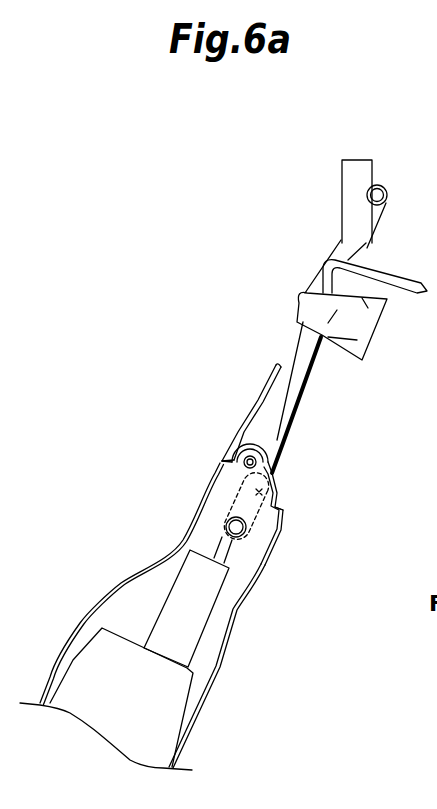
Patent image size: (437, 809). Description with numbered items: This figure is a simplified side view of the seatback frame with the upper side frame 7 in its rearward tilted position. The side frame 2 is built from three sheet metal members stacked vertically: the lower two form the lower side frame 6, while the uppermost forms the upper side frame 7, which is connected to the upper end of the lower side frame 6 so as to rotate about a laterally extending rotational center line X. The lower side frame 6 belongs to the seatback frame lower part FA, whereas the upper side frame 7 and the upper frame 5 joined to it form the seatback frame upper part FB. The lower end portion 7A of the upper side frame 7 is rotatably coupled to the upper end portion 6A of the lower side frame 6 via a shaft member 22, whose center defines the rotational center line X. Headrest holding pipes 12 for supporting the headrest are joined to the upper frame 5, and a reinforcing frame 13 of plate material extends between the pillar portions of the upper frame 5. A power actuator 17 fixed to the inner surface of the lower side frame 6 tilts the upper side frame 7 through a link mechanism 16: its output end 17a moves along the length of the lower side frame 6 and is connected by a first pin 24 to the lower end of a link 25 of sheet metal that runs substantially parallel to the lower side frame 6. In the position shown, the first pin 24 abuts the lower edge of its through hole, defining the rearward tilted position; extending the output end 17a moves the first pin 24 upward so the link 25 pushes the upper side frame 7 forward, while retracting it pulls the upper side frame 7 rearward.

The side frame 2 is at (105, 584).
The upper frame 5 is at (293, 342).
The lower side frame 6 is at (163, 558).
The upper end portion of the lower side frame 6A is at (236, 462).
The upper side frame 7 is at (264, 390).
The lower end portion of the upper side frame 7A is at (284, 468).
The headrest holding pipe 12 is at (362, 166).
The reinforcing frame 13 is at (371, 327).
The link mechanism 16 is at (296, 500).
The power actuator 17 is at (206, 637).
The output end 17a is at (233, 560).
The shaft member 22 is at (278, 458).
The first pin 24 is at (248, 533).
The link 25 is at (286, 521).
The rotational center line X is at (238, 452).
The seatback frame lower part FA is at (60, 645).
The seatback frame upper part FB is at (318, 240).